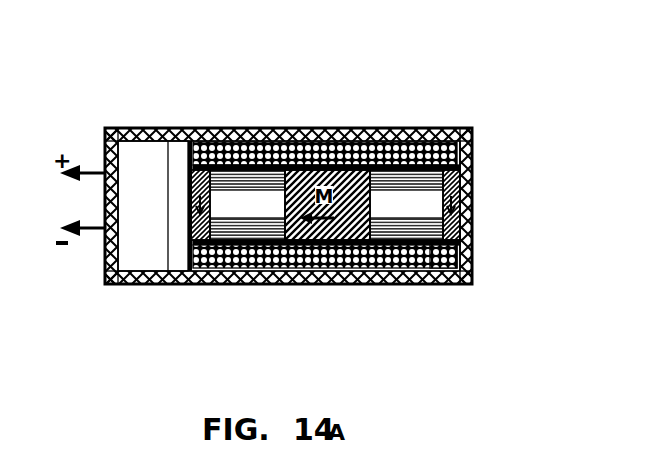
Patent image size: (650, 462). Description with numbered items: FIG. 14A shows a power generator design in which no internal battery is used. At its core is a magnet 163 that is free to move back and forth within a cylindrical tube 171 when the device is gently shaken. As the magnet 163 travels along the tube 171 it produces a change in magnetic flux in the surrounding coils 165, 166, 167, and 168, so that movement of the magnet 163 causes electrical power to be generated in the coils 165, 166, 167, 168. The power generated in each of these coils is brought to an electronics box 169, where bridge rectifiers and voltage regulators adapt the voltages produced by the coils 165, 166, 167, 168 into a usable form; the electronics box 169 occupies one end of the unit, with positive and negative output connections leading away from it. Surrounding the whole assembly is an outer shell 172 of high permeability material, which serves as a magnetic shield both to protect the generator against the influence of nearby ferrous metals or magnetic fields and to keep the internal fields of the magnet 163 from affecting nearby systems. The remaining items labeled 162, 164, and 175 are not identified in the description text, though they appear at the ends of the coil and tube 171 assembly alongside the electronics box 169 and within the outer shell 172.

The end magnet 162 is at (193, 268).
The magnet 163 is at (295, 262).
The housing end 164 is at (473, 266).
The coil 165 is at (177, 128).
The coil 166 is at (270, 128).
The coil 167 is at (370, 130).
The coil 168 is at (472, 163).
The electronics box 169 is at (105, 155).
The cylindrical tube 171 is at (320, 128).
The outer shell 172 is at (247, 284).
The end magnet 175 is at (473, 210).